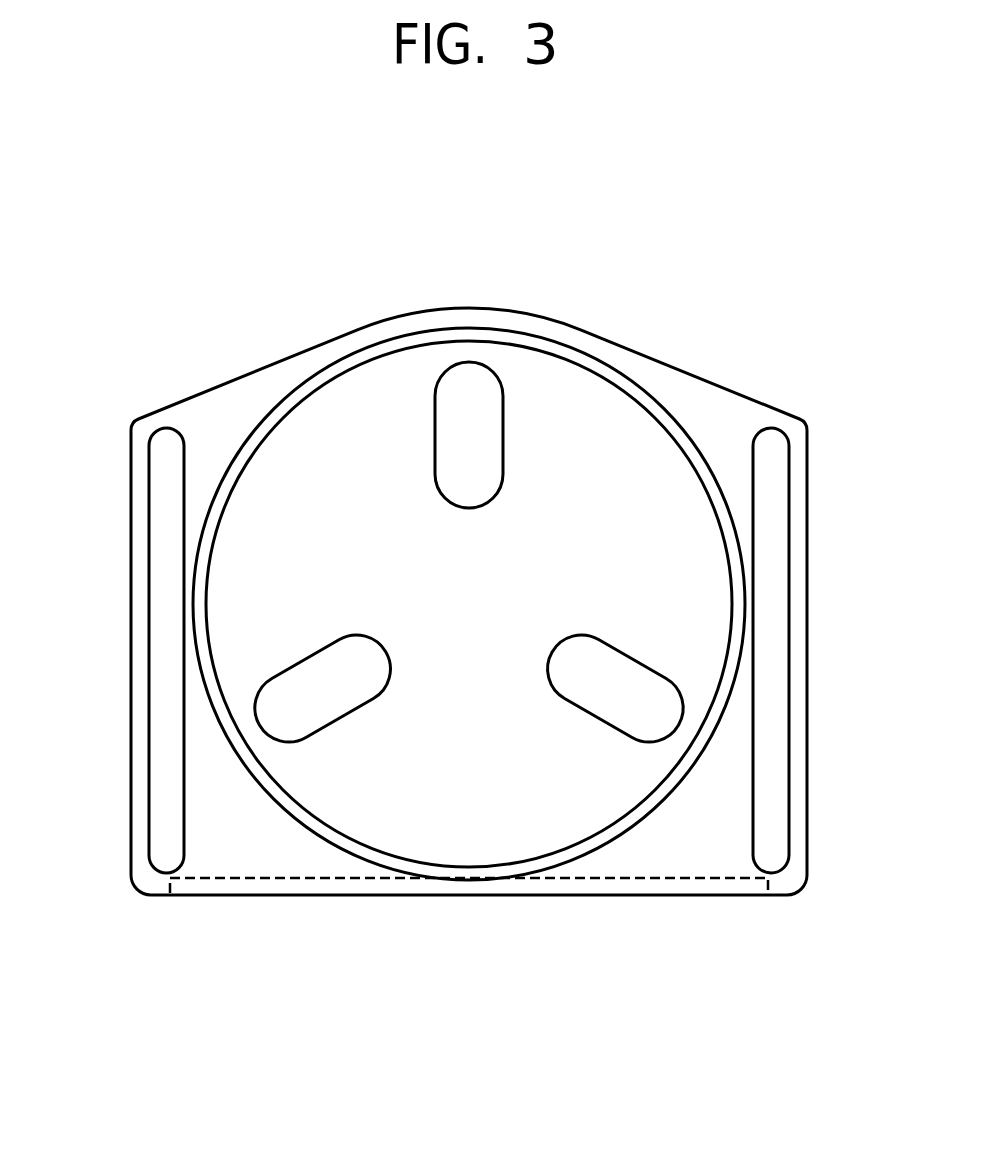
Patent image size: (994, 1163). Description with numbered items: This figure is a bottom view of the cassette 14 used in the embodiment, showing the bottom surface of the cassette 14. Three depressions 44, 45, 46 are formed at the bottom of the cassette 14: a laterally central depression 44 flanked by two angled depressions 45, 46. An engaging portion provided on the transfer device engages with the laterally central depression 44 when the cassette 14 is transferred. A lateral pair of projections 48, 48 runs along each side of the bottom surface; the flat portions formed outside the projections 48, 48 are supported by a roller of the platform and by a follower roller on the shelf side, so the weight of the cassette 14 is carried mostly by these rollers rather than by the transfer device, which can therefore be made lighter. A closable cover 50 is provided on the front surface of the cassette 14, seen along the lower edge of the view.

The cassette 14 is at (258, 305).
The depression 44 is at (467, 392).
The depression 45 is at (330, 693).
The depression 46 is at (608, 693).
The projections 48 is at (160, 763).
The closable cover 50 is at (705, 895).